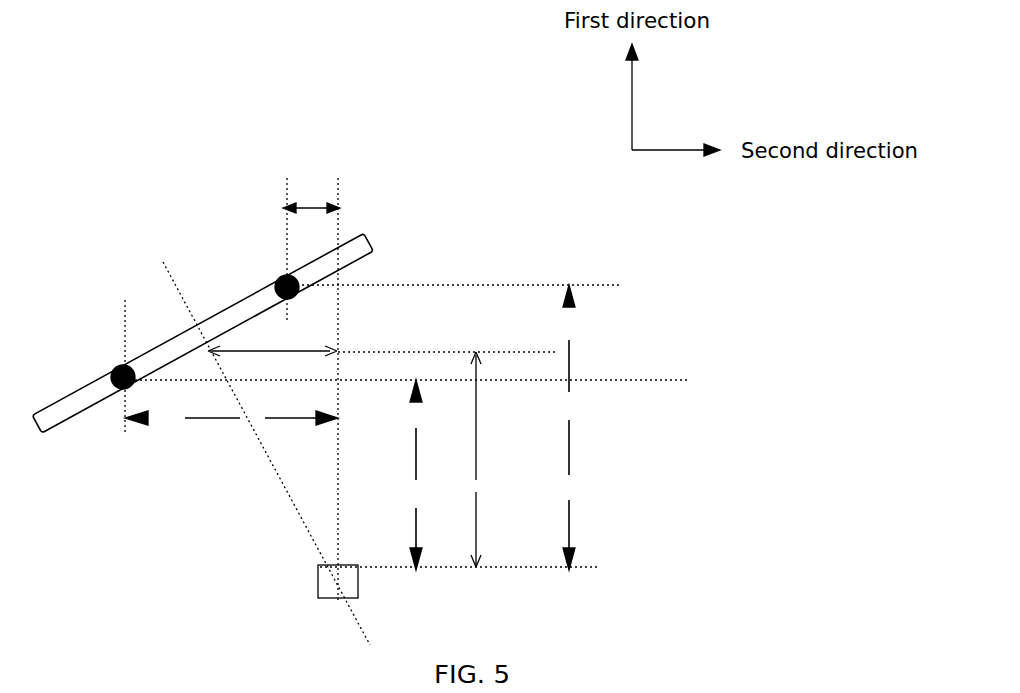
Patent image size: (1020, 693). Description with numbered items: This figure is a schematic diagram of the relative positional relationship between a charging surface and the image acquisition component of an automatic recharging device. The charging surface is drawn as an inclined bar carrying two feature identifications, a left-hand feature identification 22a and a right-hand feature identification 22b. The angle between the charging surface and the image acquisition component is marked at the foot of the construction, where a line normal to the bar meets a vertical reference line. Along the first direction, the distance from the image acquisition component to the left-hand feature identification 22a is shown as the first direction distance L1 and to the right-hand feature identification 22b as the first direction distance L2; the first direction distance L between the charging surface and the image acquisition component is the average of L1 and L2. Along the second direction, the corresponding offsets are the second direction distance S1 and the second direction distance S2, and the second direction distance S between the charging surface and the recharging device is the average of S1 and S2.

The left-hand feature identification 22a is at (118, 368).
The right-hand feature identification 22b is at (283, 280).
The second direction distance S is at (272, 340).
The second direction distance to left-hand feature identification S1 is at (231, 433).
The second direction distance to right-hand feature identification S2 is at (311, 189).
The first direction distance L is at (490, 459).
The first direction distance to left-hand feature identification L1 is at (399, 475).
The first direction distance to right-hand feature identification L2 is at (581, 427).